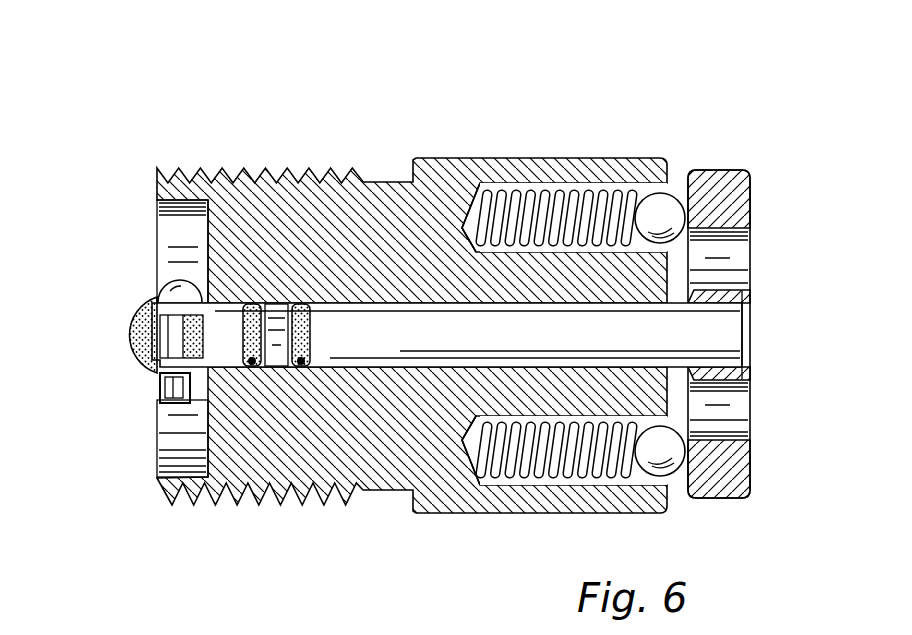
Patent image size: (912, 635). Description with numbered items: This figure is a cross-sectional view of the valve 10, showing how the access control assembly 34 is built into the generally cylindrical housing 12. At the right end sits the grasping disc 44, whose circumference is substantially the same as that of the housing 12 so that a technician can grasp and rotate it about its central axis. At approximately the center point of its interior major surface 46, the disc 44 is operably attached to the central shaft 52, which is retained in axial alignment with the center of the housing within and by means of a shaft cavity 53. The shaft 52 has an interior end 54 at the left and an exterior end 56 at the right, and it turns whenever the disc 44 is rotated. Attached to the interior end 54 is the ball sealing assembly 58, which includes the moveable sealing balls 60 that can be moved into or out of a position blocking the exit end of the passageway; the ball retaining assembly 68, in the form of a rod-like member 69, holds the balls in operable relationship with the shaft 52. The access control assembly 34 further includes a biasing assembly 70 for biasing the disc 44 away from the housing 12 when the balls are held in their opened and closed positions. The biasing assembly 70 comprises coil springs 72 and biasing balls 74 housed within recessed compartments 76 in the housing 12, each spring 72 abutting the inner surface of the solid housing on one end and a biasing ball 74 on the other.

The valve 10 is at (385, 75).
The housing 12 is at (393, 495).
The access control assembly 34 is at (766, 276).
The grasping disc 44 is at (752, 187).
The interior major surface 46 is at (682, 200).
The central shaft 52 is at (391, 330).
The shaft cavity 53 is at (341, 348).
The interior end 54 is at (132, 314).
The exterior end 56 is at (752, 331).
The ball sealing assembly 58 is at (128, 336).
The moveable sealing balls 60 is at (146, 303).
The ball retaining assembly 68 is at (160, 401).
The rod-like member 69 is at (131, 358).
The biasing assembly 70 is at (540, 152).
The coil springs 72 is at (603, 205).
The biasing balls 74 is at (655, 205).
The recessed compartments 76 is at (463, 222).